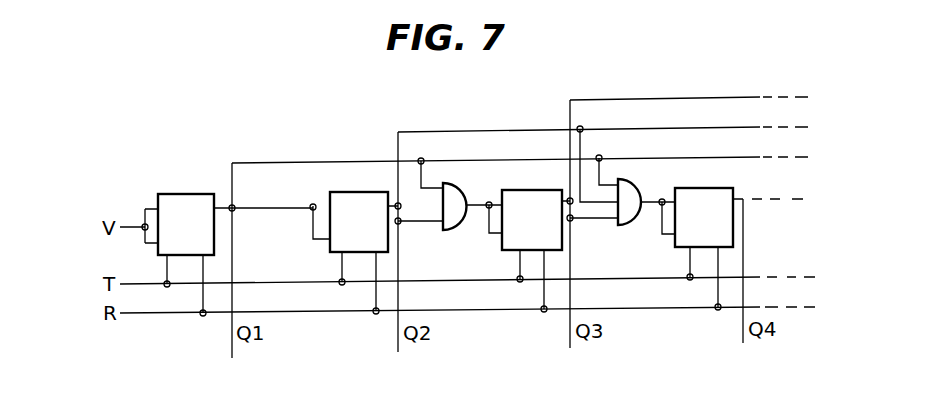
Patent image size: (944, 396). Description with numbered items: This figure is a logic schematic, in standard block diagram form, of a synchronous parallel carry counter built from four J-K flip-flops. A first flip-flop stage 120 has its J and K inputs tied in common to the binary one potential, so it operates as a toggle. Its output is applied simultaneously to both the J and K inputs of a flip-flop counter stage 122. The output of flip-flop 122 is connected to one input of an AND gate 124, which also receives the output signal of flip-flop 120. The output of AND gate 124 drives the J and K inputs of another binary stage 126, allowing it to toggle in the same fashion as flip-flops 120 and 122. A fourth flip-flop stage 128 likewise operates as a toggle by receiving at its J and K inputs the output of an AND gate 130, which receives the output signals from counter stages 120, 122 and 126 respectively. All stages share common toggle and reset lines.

The first flip-flop stage 120 is at (178, 194).
The flip-flop counter stage 122 is at (336, 192).
The AND gate 124 is at (456, 206).
The binary stage 126 is at (527, 172).
The fourth flip-flop stage 128 is at (718, 188).
The AND gate 130 is at (636, 172).